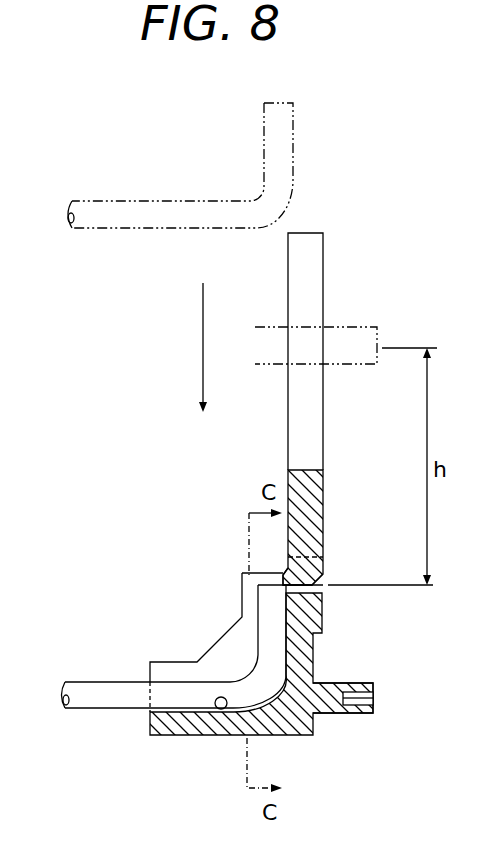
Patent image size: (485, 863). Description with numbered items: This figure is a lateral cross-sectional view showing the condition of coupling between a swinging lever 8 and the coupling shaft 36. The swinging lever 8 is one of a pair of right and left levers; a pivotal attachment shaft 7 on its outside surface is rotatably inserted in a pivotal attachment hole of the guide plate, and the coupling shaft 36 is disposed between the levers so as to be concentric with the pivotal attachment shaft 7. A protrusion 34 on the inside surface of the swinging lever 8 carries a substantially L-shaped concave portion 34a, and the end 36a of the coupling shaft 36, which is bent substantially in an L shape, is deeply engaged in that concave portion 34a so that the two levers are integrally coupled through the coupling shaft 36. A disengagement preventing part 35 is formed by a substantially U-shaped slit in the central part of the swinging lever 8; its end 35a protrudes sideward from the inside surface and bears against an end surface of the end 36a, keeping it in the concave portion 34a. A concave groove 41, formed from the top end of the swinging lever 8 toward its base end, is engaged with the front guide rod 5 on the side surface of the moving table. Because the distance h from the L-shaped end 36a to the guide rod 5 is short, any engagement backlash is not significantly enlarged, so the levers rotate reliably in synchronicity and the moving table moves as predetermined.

The guide rod 5 is at (345, 331).
The pivotal attachment shaft 7 is at (340, 713).
The swinging lever 8 is at (325, 488).
The protrusion 34 is at (160, 738).
The concave portion 34a is at (220, 709).
The disengagement preventing part 35 is at (325, 580).
The end of disengagement preventing part 35a is at (283, 574).
The coupling shaft 36 is at (100, 711).
The end of coupling shaft 36a is at (263, 612).
The concave groove 41 is at (296, 440).